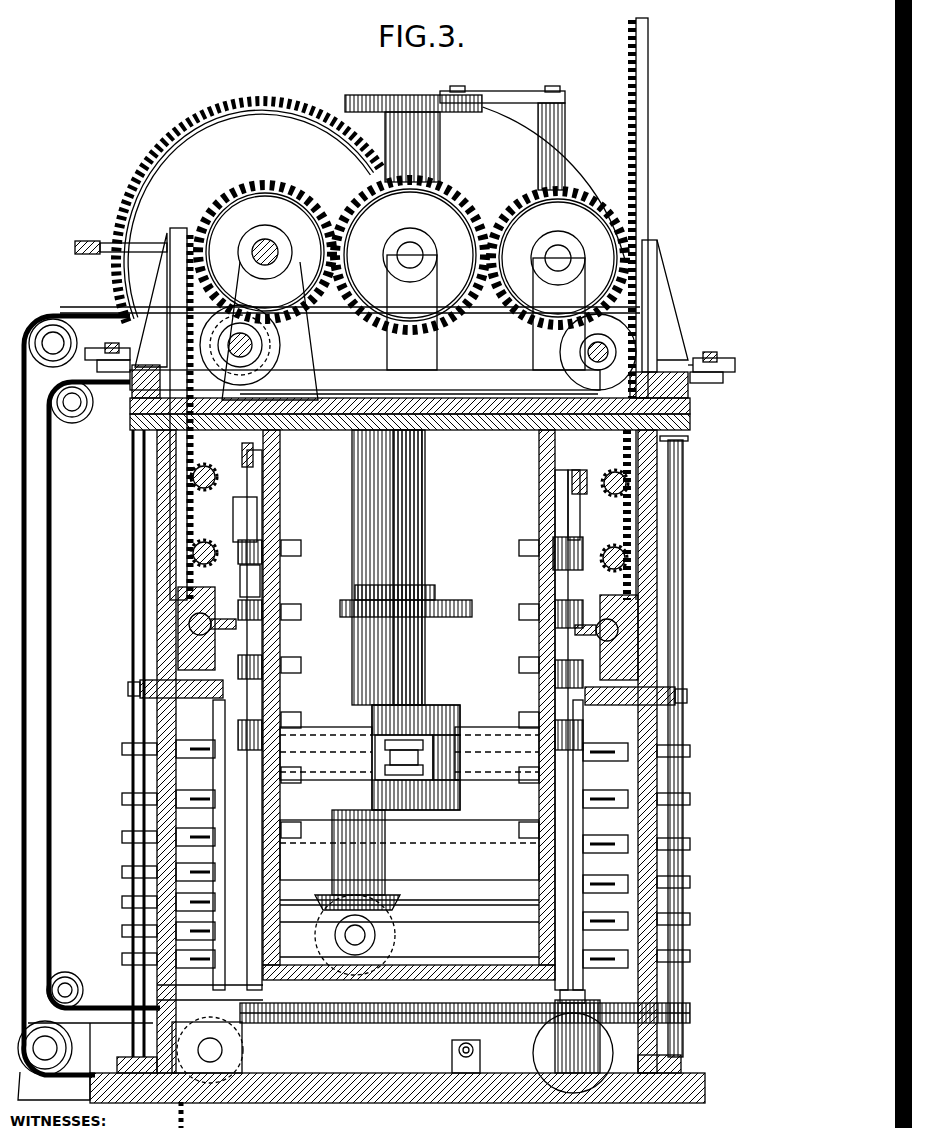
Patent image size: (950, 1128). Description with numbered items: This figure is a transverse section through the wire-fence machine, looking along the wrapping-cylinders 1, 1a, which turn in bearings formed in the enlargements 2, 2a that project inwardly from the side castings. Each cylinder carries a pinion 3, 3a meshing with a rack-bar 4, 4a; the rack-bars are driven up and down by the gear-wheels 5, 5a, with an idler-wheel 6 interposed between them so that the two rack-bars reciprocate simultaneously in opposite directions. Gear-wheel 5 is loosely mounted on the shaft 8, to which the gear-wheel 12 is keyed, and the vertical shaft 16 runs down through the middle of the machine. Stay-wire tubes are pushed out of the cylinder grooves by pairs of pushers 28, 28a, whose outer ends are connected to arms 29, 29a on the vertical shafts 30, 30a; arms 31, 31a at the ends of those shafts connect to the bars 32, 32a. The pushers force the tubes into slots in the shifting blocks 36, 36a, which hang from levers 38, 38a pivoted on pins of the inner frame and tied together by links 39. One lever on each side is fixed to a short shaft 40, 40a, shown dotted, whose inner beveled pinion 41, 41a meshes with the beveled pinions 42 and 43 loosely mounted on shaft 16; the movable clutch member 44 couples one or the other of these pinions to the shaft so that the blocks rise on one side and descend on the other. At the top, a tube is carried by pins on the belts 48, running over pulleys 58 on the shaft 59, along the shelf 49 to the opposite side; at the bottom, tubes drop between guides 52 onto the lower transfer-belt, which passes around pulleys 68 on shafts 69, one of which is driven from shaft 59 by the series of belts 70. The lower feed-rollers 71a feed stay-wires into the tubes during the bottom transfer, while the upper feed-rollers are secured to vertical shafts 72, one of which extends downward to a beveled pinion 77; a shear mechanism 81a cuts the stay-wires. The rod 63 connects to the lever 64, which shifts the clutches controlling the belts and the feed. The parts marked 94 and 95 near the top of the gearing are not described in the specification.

The wrapping-cylinder 1 is at (189, 628).
The wrapping-cylinder 1a is at (640, 635).
The enlargement 2 is at (196, 618).
The enlargement 2a is at (640, 606).
The pinion 3 is at (208, 503).
The pinion 3a is at (608, 517).
The rack-bar 4 is at (188, 232).
The rack-bar 4a is at (646, 113).
The gear-wheel 5 is at (265, 292).
The gear-wheel 5a is at (558, 280).
The idler-wheel 6 is at (410, 275).
The shaft 8 is at (278, 253).
The gear-wheel 12 is at (150, 160).
The vertical shaft 16 is at (424, 518).
The pusher 28 is at (210, 735).
The pusher 28a is at (660, 684).
The arm 29 is at (128, 690).
The arm 29a is at (688, 697).
The vertical shaft 30 is at (131, 573).
The vertical shaft 30a is at (684, 493).
The arm 31 is at (125, 372).
The arm 31a is at (710, 383).
The bar 32 is at (111, 344).
The bar 32a is at (718, 349).
The shifting block 36 is at (270, 641).
The shifting block 36a is at (568, 636).
The lever 38 is at (238, 523).
The lever 38a is at (596, 540).
The link 39 is at (262, 586).
The short shaft 40 is at (307, 735).
The short shaft 40a is at (409, 842).
The beveled pinion 41 is at (368, 726).
The beveled pinion 41a is at (458, 730).
The beveled pinion 42 is at (452, 698).
The beveled pinion 43 is at (445, 800).
The movable clutch member 44 is at (397, 766).
The transfer-belt 48 is at (350, 350).
The shelf 49 is at (444, 431).
The guide 52 is at (582, 975).
The pulley 58 is at (266, 343).
The shaft 59 is at (250, 355).
The rod 63 is at (75, 250).
The lever 64 is at (148, 262).
The pulley 68 is at (243, 1042).
The shaft 69 is at (212, 1050).
The belt 70 is at (127, 1022).
The feed-roller 71a is at (444, 1004).
The vertical shaft 72 is at (352, 493).
The beveled pinion 77 is at (395, 900).
The shear mechanism 81a is at (466, 1043).
The bar 94 is at (500, 100).
The pinion 95 is at (378, 135).